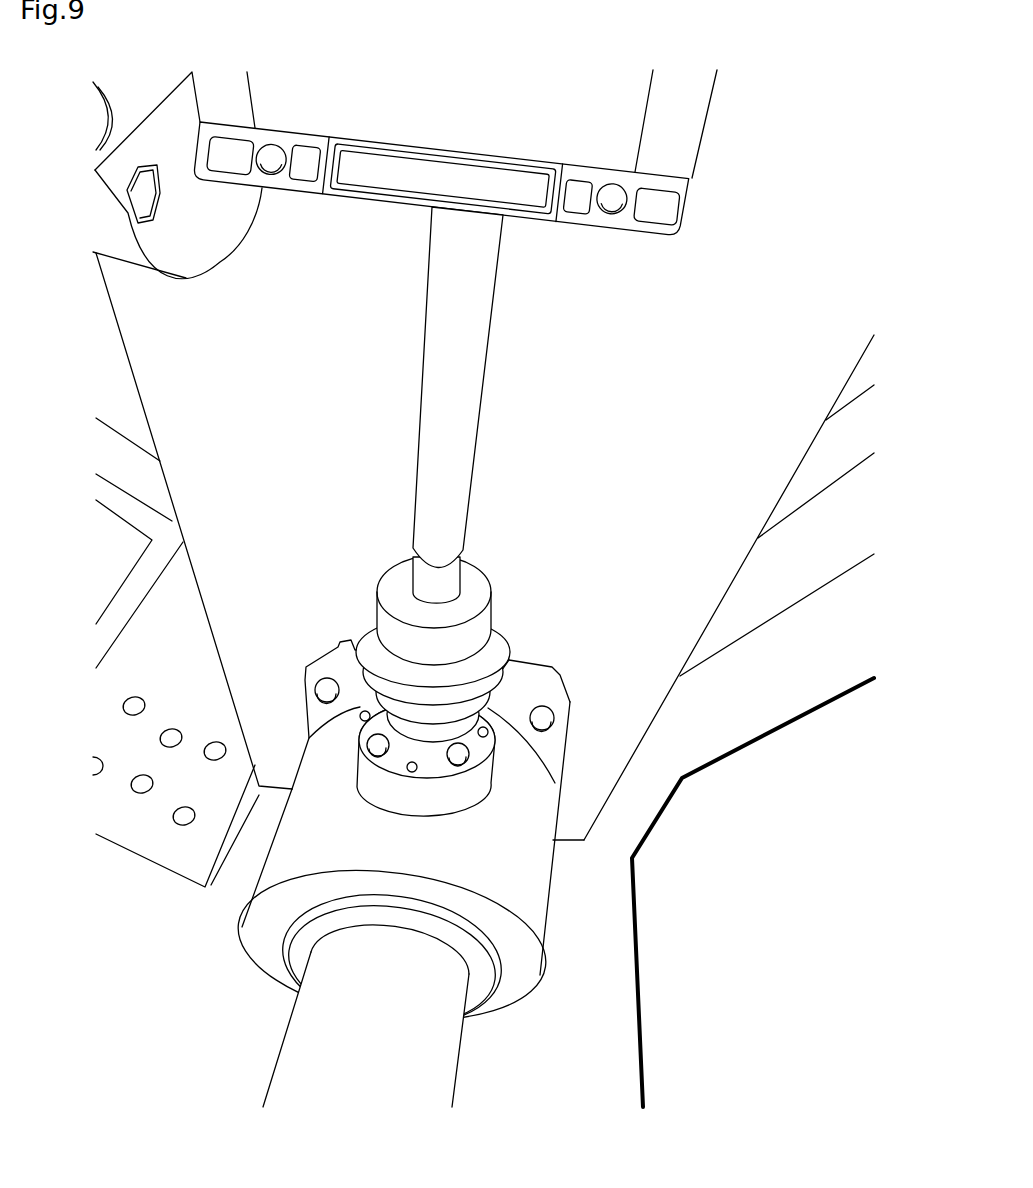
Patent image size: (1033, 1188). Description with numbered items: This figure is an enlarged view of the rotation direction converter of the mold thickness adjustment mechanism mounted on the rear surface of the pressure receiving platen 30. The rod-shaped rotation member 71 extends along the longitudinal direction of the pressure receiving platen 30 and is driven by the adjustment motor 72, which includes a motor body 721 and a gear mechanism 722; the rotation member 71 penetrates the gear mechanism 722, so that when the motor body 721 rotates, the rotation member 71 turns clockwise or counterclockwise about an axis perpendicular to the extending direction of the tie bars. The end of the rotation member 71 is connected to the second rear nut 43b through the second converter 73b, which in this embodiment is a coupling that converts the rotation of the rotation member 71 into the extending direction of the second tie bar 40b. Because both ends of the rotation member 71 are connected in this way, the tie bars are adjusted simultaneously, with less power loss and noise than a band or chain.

The pressure receiving platen 30 is at (662, 354).
The second tie bar 40b is at (440, 1050).
The second rear nut 43b is at (527, 883).
The rotation member 71 is at (463, 413).
The adjustment motor 72 is at (392, 231).
The motor body 721 is at (218, 250).
The gear mechanism 722 is at (347, 118).
The second converter 73b is at (498, 633).